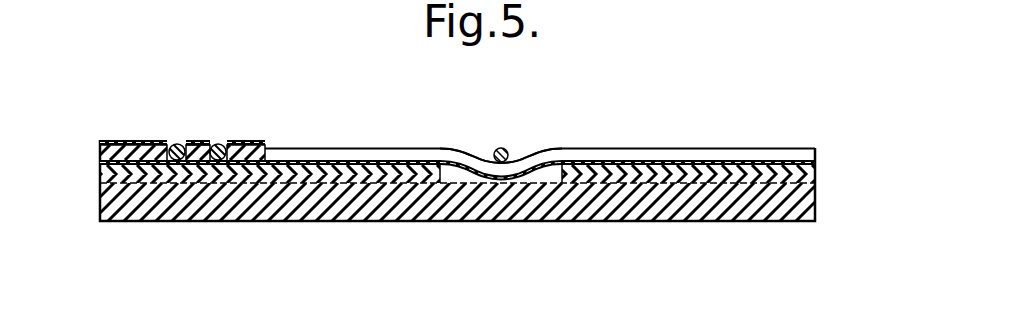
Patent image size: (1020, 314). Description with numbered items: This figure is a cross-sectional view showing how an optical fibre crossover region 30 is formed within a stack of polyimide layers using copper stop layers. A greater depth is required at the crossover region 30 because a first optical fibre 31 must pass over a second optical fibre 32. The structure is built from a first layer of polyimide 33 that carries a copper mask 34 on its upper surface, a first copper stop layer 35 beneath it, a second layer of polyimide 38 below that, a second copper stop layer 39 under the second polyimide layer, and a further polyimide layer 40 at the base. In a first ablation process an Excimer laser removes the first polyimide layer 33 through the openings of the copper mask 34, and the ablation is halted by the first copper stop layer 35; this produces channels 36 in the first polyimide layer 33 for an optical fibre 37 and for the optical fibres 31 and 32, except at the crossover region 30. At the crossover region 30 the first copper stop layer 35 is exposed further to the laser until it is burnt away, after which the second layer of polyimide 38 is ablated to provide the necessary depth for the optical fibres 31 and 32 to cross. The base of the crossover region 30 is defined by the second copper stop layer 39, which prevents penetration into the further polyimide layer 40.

The crossover region 30 is at (503, 138).
The first optical fibre 31 is at (512, 152).
The second optical fibre 32 is at (681, 147).
The first layer of polyimide 33 is at (107, 148).
The copper mask 34 is at (117, 140).
The first copper stop layer 35 is at (100, 163).
The channels 36 is at (172, 137).
The optical fibre 37 is at (220, 142).
The second layer of polyimide 38 is at (800, 178).
The second copper stop layer 39 is at (100, 184).
The further polyimide layer 40 is at (793, 203).